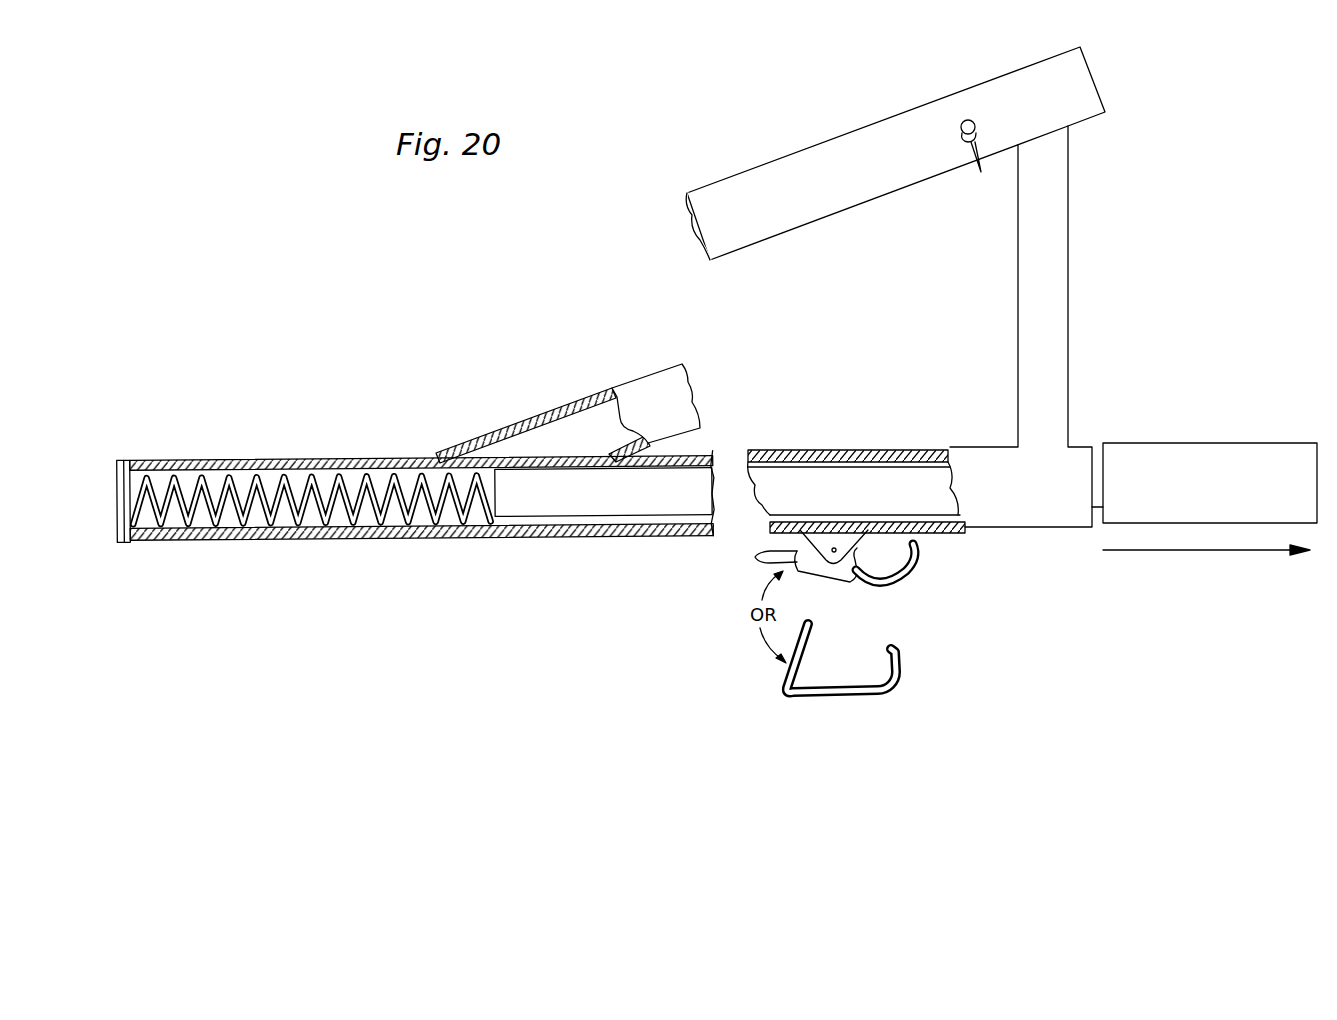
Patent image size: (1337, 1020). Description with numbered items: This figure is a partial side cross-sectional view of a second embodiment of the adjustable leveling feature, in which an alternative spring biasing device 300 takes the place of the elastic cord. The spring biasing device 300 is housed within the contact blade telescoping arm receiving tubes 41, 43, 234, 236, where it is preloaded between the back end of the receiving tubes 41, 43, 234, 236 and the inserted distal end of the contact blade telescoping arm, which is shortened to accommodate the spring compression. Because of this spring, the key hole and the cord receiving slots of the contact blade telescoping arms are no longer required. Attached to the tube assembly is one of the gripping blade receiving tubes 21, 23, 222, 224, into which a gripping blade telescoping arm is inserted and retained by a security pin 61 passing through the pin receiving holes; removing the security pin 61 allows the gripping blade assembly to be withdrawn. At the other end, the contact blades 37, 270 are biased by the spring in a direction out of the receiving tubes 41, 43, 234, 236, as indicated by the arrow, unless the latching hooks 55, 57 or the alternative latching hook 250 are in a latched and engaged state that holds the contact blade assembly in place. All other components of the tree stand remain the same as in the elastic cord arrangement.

The security pin 61 is at (962, 122).
The gripping blade receiving tube 21 is at (611, 383).
The gripping blade receiving tube 23 is at (611, 383).
The gripping blade receiving tube 222 is at (611, 383).
The gripping blade receiving tube 224 is at (648, 375).
The spring biasing device 300 is at (312, 460).
The contact blade telescoping arm receiving tube 41 is at (415, 507).
The contact blade telescoping arm receiving tube 43 is at (415, 507).
The contact blade telescoping arm receiving tube 234 is at (415, 507).
The contact blade telescoping arm receiving tube 236 is at (415, 507).
The contact blade 37 is at (1204, 445).
The contact blade 270 is at (1232, 443).
The latching hook 55 is at (895, 566).
The latching hook 57 is at (935, 556).
The latching hook 250 is at (930, 668).